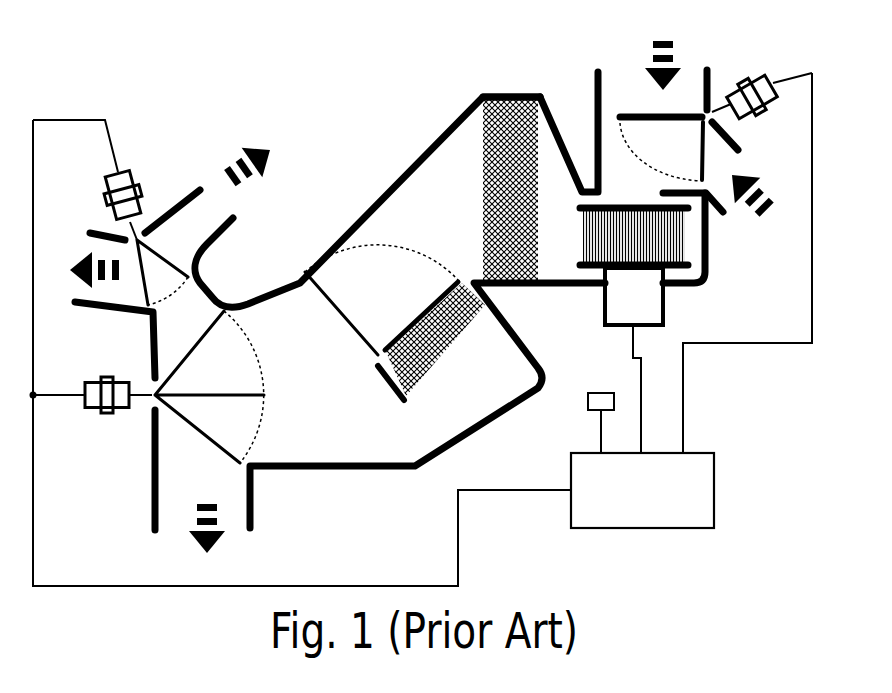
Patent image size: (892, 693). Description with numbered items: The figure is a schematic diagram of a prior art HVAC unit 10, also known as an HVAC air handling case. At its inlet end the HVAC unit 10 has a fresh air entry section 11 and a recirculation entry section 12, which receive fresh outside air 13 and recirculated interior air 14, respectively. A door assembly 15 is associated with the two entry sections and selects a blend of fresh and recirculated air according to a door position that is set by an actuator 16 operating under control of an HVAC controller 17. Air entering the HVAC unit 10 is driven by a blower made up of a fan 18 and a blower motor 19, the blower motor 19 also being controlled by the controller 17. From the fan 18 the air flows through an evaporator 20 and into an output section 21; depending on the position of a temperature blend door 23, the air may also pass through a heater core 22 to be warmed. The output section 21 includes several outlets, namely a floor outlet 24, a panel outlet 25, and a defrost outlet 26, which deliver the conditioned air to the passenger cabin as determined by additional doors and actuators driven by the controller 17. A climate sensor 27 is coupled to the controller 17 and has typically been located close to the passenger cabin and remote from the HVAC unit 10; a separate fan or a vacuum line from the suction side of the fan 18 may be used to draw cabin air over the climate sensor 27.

The HVAC unit 10 is at (412, 160).
The fresh air entry section 11 is at (605, 82).
The recirculation entry section 12 is at (727, 157).
The fresh outside air 13 is at (650, 55).
The recirculated interior air 14 is at (748, 207).
The door assembly 15 is at (680, 115).
The actuator 16 is at (760, 76).
The HVAC controller 17 is at (714, 492).
The fan 18 is at (688, 250).
The blower motor 19 is at (605, 302).
The evaporator 20 is at (508, 95).
The output section 21 is at (271, 314).
The heater core 22 is at (455, 355).
The temperature blend door 23 is at (356, 342).
The floor outlet 24 is at (250, 517).
The panel outlet 25 is at (78, 298).
The defrost outlet 26 is at (200, 190).
The climate sensor 27 is at (588, 397).